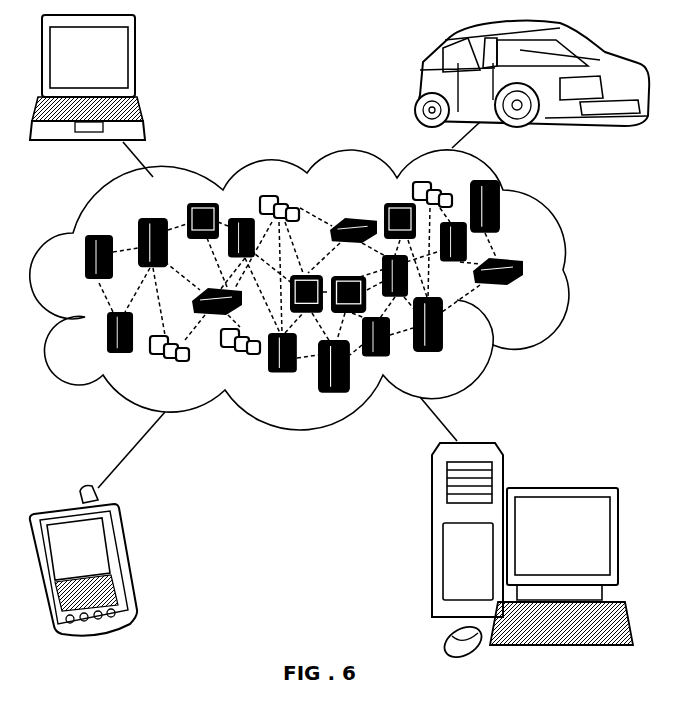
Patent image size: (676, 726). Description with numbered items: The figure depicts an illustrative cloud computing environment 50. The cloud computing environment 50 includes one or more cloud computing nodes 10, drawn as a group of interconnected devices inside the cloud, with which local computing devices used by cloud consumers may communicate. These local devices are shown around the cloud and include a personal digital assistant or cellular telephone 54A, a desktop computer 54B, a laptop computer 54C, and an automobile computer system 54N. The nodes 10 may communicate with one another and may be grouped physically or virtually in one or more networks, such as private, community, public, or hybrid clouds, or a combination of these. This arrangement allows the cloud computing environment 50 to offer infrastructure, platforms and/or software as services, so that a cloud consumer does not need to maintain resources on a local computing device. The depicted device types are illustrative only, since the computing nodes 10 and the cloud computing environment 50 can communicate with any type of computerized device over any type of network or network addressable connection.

The cloud computing nodes 10 is at (528, 296).
The cloud computing environment 50 is at (567, 270).
The personal digital assistant or cellular telephone 54A is at (120, 551).
The desktop computer 54B is at (560, 486).
The laptop computer 54C is at (133, 62).
The automobile computer system 54N is at (425, 82).